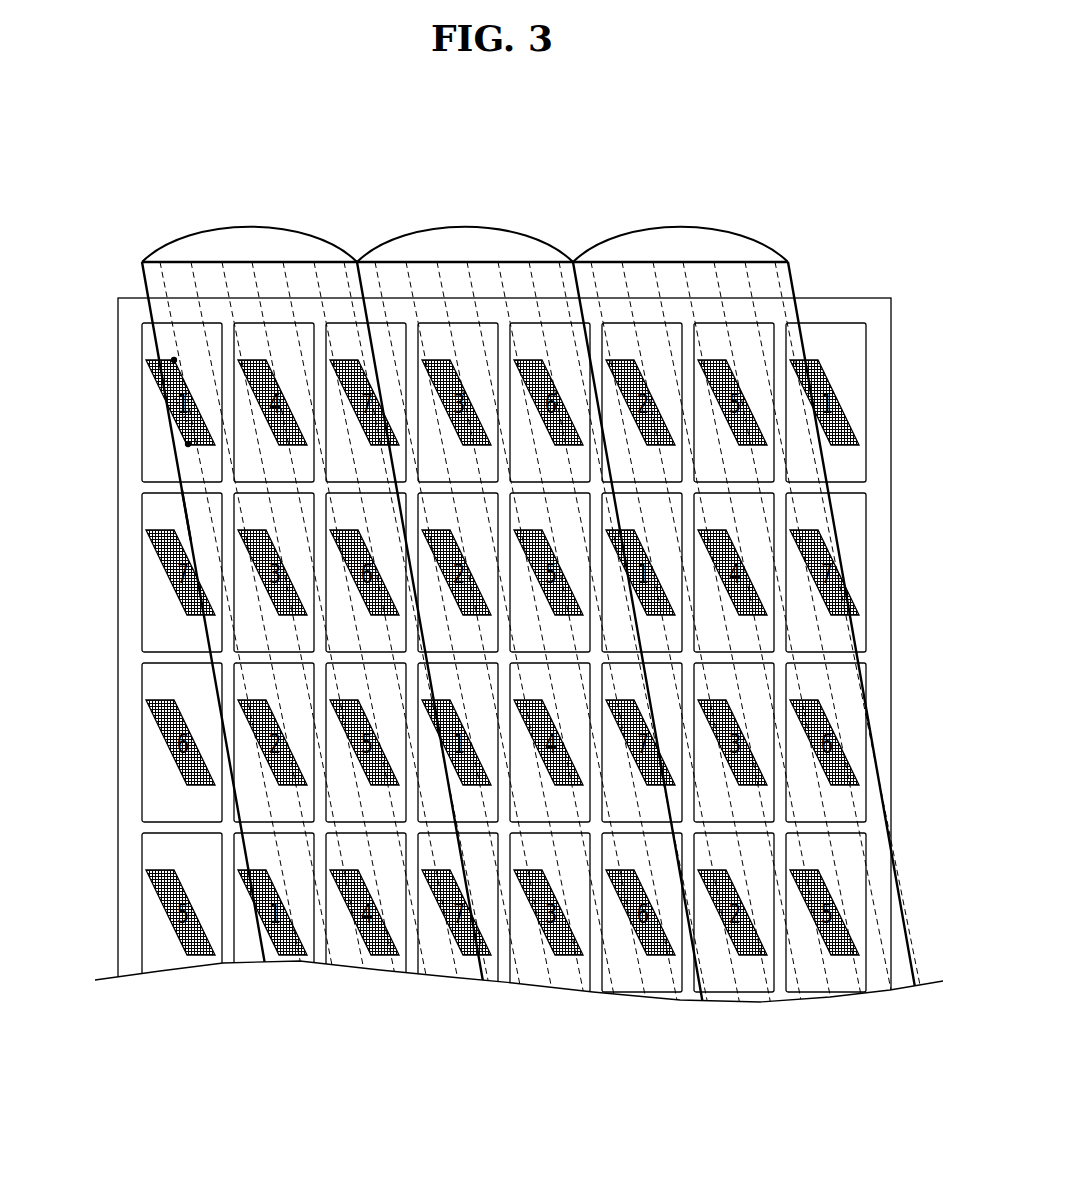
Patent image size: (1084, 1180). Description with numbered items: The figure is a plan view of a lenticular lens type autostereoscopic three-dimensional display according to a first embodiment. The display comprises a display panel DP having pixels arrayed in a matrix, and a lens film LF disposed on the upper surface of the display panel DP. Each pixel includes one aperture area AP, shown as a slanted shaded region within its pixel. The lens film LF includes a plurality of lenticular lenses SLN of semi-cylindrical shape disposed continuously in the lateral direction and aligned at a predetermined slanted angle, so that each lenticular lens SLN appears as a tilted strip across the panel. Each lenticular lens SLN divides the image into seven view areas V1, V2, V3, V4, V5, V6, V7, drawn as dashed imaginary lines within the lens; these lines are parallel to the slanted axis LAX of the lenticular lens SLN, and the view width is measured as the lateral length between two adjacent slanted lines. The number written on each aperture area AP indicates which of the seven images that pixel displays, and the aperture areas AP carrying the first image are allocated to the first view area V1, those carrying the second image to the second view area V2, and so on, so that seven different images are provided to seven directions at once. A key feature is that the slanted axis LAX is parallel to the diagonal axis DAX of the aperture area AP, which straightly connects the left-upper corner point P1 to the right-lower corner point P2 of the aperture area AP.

The first view area V1 is at (160, 262).
The second view area V2 is at (191, 262).
The third view area V3 is at (222, 262).
The fourth view area V4 is at (252, 262).
The fifth view area V5 is at (283, 262).
The sixth view area V6 is at (314, 262).
The seventh view area V7 is at (344, 262).
The lenticular lens SLN is at (455, 228).
The lens film LF is at (118, 281).
The left-upper corner point P1 is at (172, 358).
The diagonal axis DAX is at (162, 386).
The right-lower corner point P2 is at (186, 445).
The slanted axis LAX is at (214, 511).
The aperture area AP is at (830, 374).
The display panel DP is at (893, 538).